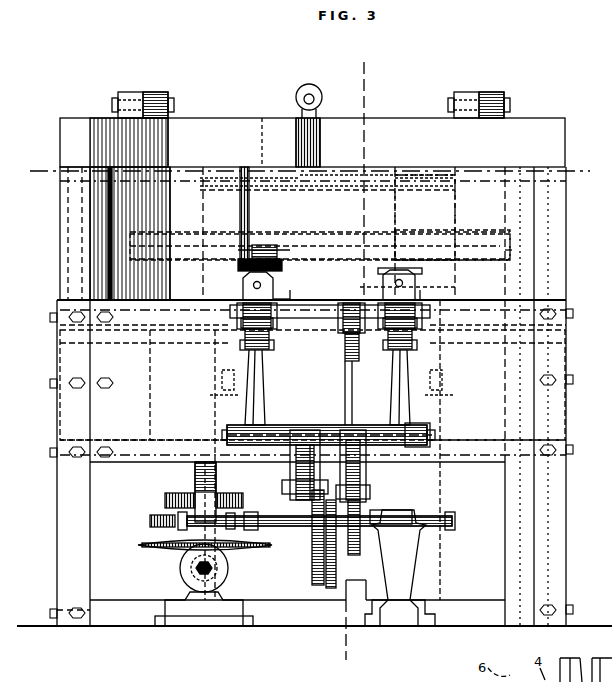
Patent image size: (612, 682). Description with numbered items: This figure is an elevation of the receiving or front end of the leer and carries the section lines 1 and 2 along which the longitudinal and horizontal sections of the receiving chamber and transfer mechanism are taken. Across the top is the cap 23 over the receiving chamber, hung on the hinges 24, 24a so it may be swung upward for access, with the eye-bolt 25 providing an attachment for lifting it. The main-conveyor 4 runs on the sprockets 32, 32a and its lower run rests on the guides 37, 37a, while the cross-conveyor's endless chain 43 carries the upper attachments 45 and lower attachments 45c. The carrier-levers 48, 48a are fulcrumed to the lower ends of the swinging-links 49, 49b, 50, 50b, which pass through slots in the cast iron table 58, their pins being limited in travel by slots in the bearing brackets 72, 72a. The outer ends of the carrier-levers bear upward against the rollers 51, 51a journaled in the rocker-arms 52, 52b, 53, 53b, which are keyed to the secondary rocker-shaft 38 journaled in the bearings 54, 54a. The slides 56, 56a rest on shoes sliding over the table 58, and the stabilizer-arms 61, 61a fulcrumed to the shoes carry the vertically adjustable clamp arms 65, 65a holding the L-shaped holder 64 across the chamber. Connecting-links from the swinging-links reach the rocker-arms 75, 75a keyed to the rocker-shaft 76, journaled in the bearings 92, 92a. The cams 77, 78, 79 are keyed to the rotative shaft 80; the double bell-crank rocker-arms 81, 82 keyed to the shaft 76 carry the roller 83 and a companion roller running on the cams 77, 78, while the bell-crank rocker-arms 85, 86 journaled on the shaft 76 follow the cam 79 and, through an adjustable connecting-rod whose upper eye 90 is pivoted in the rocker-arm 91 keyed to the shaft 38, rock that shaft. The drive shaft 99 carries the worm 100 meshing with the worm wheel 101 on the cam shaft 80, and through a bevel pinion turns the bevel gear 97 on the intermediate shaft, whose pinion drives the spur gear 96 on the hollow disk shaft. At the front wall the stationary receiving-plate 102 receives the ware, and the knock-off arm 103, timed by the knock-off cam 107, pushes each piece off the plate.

The section line 1— 1 is at (353, 359).
The section line 2— 2 is at (297, 177).
The main-conveyor 4 is at (318, 279).
The cap 23 is at (312, 142).
The hinges 24 is at (160, 90).
The clamp 24a is at (492, 90).
The eye-bolt 25 is at (295, 90).
The sprockets 32 is at (216, 385).
The guide 32a is at (446, 383).
The guide 37 is at (212, 397).
The guide block 37a is at (450, 398).
The secondary rocker-shaft 38 is at (310, 300).
The endless chain 43 is at (306, 228).
The attachment 45 is at (507, 230).
The attachment 45c is at (510, 252).
The carrier-levers 48 is at (272, 347).
The carriage 48a is at (420, 347).
The swinging-link 49 is at (420, 290).
The swinging-link 49b is at (385, 282).
The swinging-link 50 is at (269, 286).
The swinging-link 50b is at (252, 290).
The rollers 51 is at (248, 337).
The clamp block 51a is at (418, 334).
The rocker-arm 52 is at (270, 323).
The rocker-arm 52b is at (240, 322).
The rocker-arm 53 is at (416, 322).
The rocker-arm 53b is at (342, 335).
The bearings 54 is at (242, 328).
The guide 54a is at (420, 312).
The slides 56 is at (283, 269).
The bracket 56a is at (397, 279).
The cast iron table 58 is at (138, 318).
The stabilizer-arms 61 is at (262, 212).
The post 61a is at (400, 212).
The L-shaped holder 64 is at (443, 176).
The clamp arms 65 is at (259, 186).
The rail 65a is at (409, 188).
The bearing brackets 72 is at (262, 392).
The lever 72a is at (382, 387).
The rocker-arms 75 is at (262, 378).
The lever arm 75a is at (405, 385).
The rocker-shaft 76 is at (420, 435).
The cam 77 is at (305, 573).
The cam 78 is at (317, 549).
The cam 79 is at (350, 545).
The rotative shaft 80 is at (270, 528).
The double bell-crank rocker-arm 81 is at (300, 470).
The double bell-crank rocker-arm 82 is at (320, 448).
The roller 83 is at (292, 492).
The rocker-arm 85 is at (320, 458).
The rocker-arm 86 is at (360, 450).
The upper eye 90 is at (356, 343).
The rocker-arm 91 is at (336, 325).
The bearings 92 is at (265, 430).
The rock shaft 92a is at (372, 428).
The spur gear 96 is at (177, 496).
The bevel gear 97 is at (150, 546).
The drive shaft 99 is at (210, 566).
The worm 100 is at (196, 580).
The worm wheel 101 is at (224, 484).
The stationary receiving-plate 102 is at (282, 256).
The knock-off arm 103 is at (268, 248).
The knock-off cam 107 is at (158, 520).